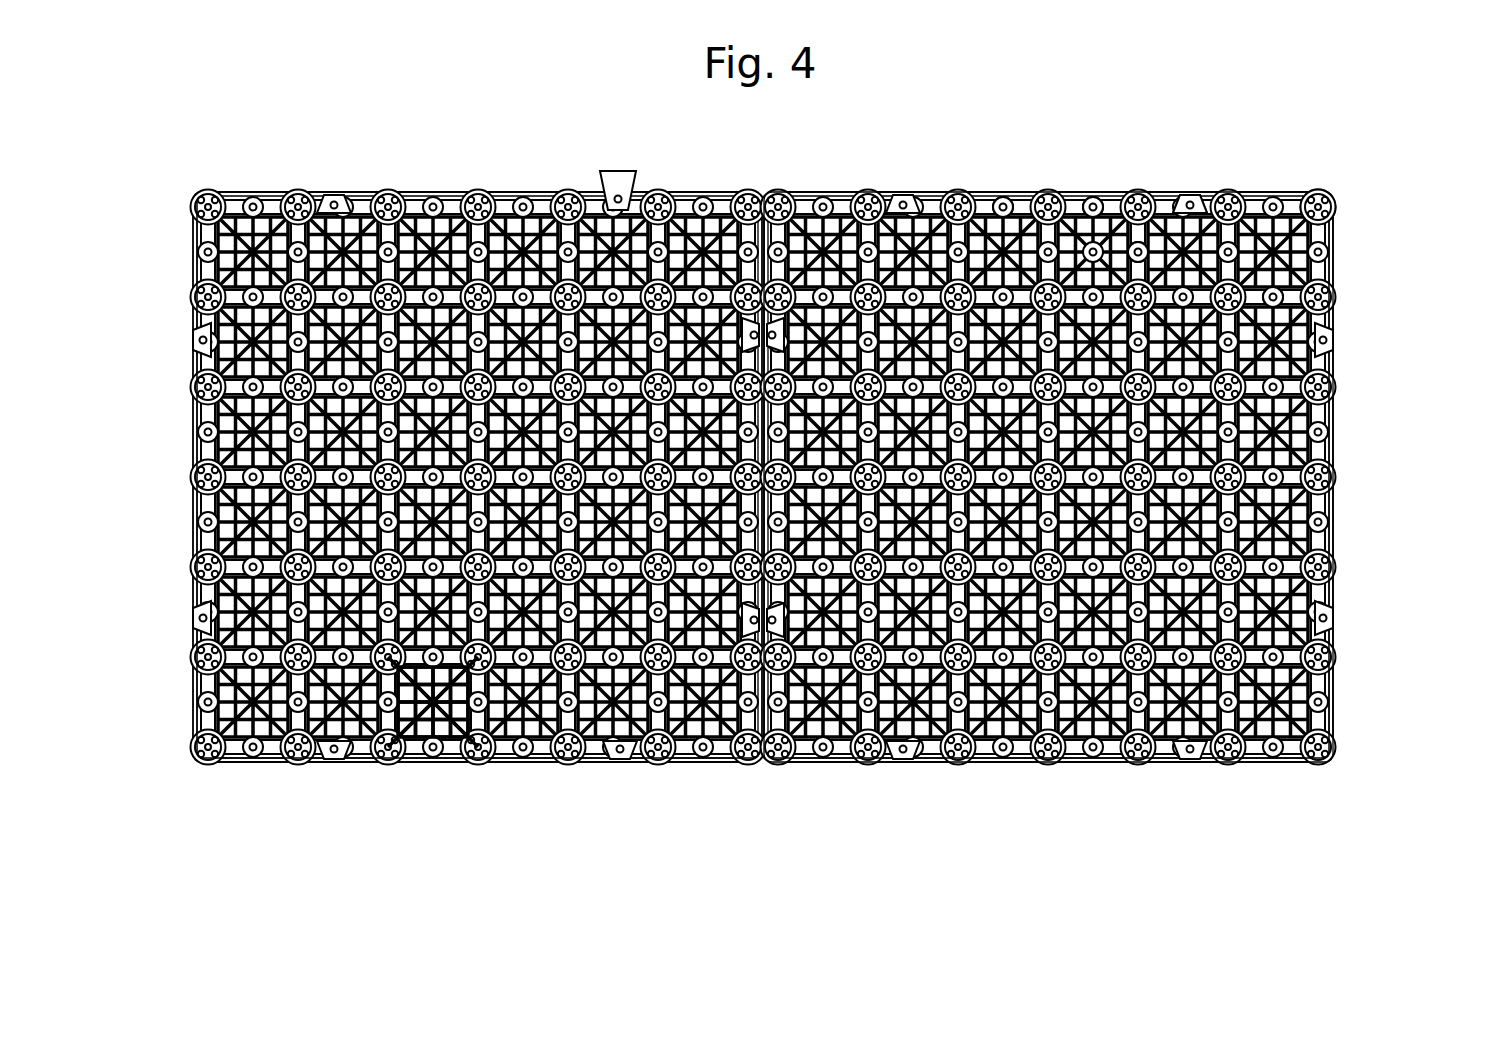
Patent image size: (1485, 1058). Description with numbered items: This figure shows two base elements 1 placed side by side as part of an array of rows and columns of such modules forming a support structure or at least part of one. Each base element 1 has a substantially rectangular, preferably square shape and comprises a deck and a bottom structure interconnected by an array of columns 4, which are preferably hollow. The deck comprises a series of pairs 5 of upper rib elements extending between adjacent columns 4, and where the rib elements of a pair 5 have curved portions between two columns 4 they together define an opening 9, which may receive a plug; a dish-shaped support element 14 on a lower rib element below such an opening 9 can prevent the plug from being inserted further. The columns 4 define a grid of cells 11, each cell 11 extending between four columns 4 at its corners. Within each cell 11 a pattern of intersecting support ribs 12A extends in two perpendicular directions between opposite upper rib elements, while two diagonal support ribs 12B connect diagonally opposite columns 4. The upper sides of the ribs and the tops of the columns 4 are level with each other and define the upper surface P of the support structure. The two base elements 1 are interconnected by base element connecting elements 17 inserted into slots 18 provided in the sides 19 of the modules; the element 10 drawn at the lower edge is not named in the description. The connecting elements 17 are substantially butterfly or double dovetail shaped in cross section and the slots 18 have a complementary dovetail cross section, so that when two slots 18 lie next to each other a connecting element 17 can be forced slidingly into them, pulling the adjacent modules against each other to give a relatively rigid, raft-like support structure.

The base element 1 is at (607, 787).
The column 4 is at (1320, 200).
The pair of upper rib elements 5 is at (1380, 425).
The opening 9 is at (1148, 236).
The connecting tab 10 is at (905, 777).
The cell 11 is at (1088, 207).
The intersecting support ribs 12A is at (1103, 225).
The diagonal support ribs 12B is at (1210, 210).
The support element 14 is at (886, 213).
The base element connecting element 17 is at (618, 170).
The slot 18 is at (337, 183).
The side 19 is at (187, 641).
The upper surface P is at (430, 708).